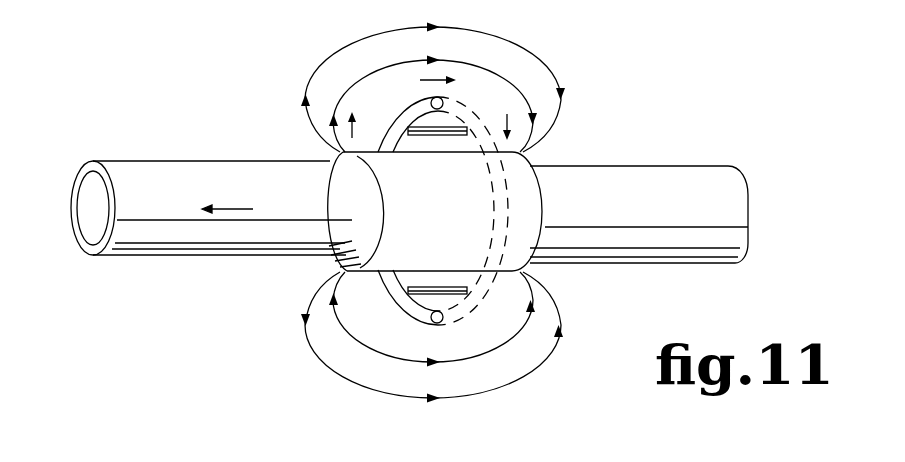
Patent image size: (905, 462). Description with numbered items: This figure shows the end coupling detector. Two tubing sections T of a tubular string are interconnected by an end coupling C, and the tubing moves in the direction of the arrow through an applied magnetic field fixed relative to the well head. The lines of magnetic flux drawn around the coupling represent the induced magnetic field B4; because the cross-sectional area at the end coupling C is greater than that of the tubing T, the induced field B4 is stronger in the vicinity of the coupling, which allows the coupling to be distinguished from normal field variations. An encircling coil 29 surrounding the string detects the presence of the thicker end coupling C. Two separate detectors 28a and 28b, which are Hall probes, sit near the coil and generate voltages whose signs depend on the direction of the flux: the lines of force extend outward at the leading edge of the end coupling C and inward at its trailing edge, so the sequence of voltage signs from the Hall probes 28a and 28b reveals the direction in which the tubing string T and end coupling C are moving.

The tubing section T is at (225, 173).
The end coupling C is at (530, 232).
The encircling coil 29 is at (443, 98).
The detector (Hall probe) 28a is at (477, 105).
The detector (Hall probe) 28b is at (458, 320).
The induced magnetic field B4 is at (433, 204).